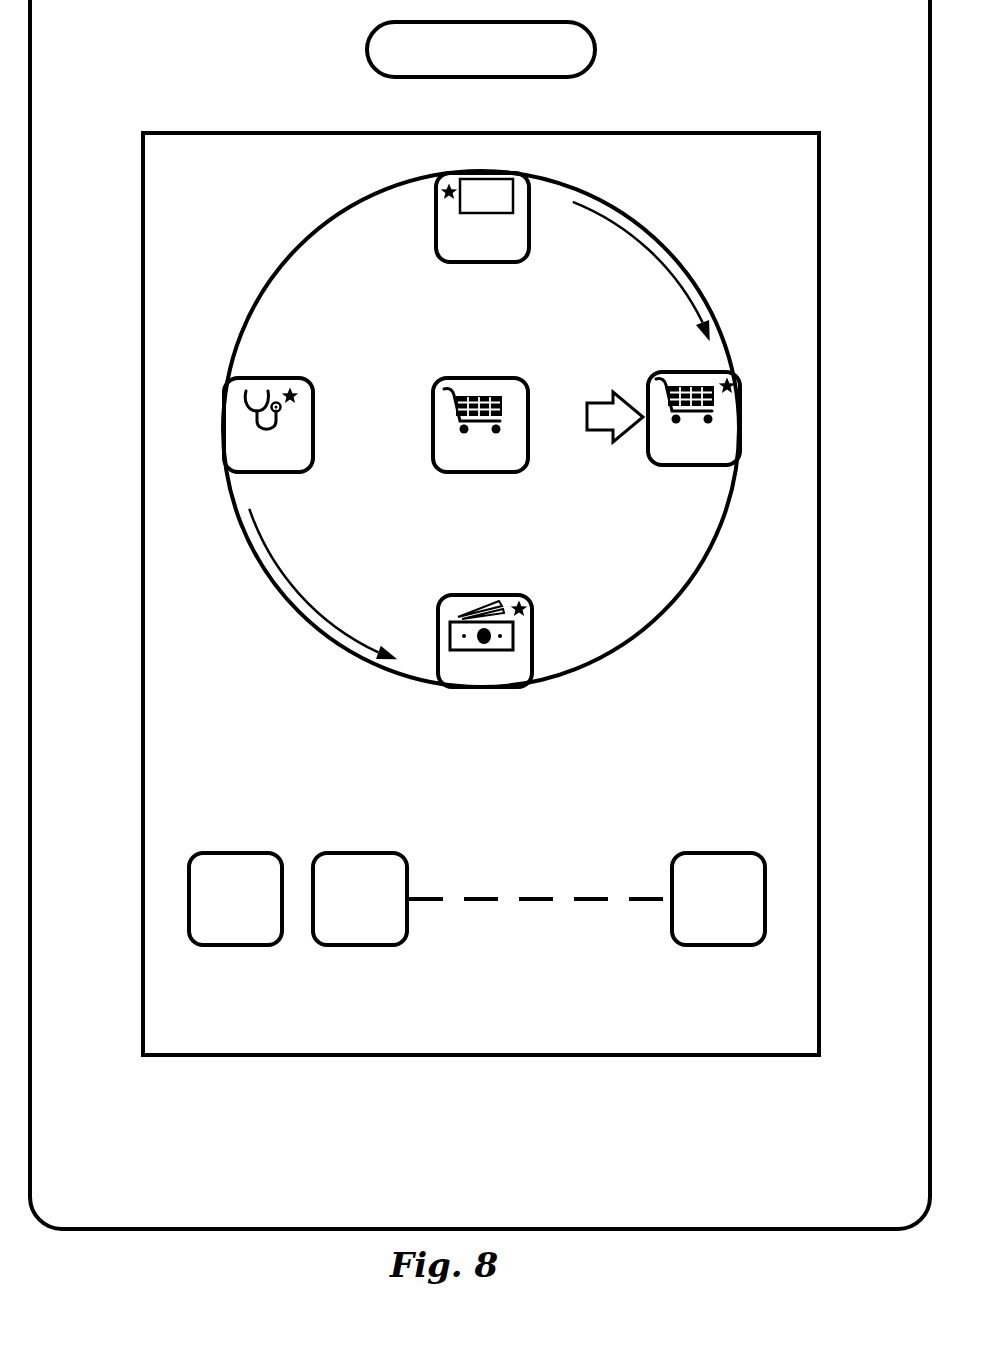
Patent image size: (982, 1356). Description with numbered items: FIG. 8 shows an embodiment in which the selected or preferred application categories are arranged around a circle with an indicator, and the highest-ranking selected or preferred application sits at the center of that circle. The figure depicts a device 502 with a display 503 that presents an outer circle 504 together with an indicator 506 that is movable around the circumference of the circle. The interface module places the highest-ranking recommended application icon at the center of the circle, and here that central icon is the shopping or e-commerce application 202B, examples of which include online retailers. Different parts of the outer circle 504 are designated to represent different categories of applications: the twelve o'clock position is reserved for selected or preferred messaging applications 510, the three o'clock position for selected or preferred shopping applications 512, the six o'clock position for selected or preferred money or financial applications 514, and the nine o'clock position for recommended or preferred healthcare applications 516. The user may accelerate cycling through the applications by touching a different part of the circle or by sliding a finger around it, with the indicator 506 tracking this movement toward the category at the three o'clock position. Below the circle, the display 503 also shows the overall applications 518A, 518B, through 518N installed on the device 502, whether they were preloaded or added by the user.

The device 502 is at (444, 1104).
The display 503 is at (446, 994).
The outer circle 504 is at (603, 656).
The indicator 506 is at (613, 441).
The selected/preferred messaging applications 510 is at (466, 251).
The selected/preferred shopping applications 512 is at (676, 454).
The selected/preferred money/financial applications 514 is at (468, 677).
The selected/preferred healthcare applications 516 is at (250, 461).
The shopping or e-commerce application 202B is at (458, 463).
The application 518A is at (212, 934).
The application 518B is at (337, 934).
The application 518N is at (695, 934).